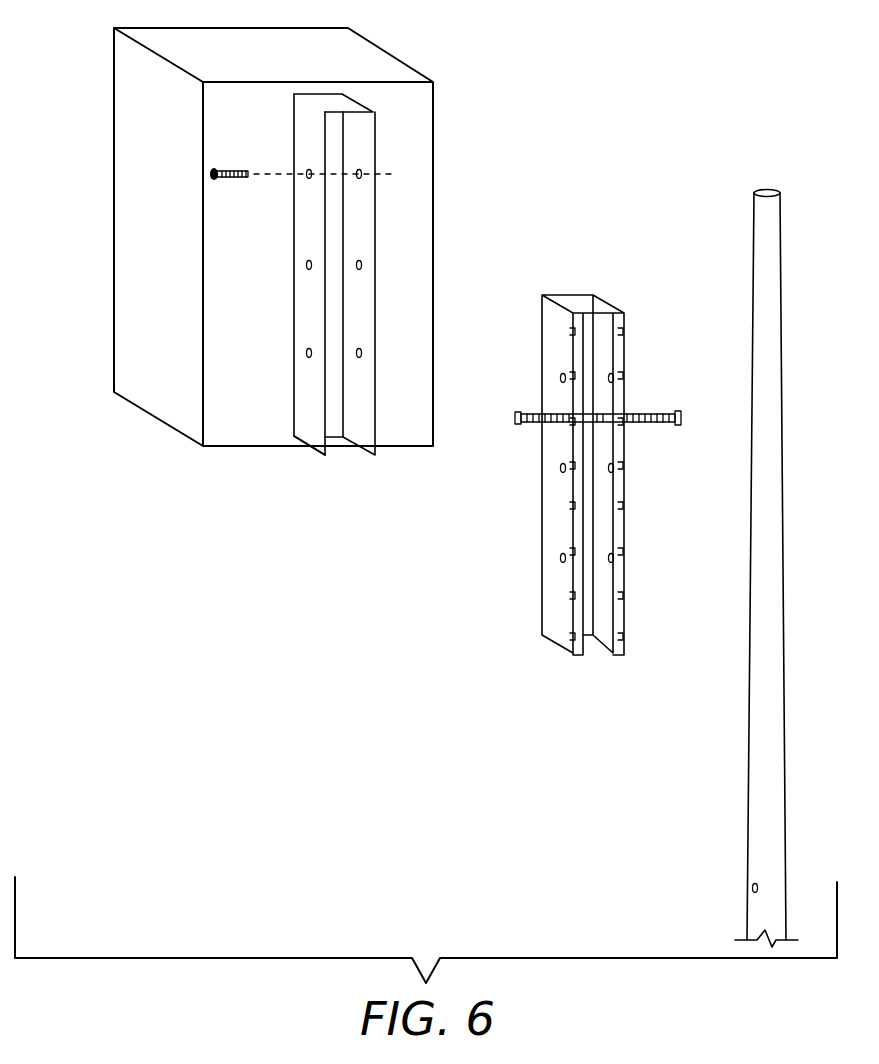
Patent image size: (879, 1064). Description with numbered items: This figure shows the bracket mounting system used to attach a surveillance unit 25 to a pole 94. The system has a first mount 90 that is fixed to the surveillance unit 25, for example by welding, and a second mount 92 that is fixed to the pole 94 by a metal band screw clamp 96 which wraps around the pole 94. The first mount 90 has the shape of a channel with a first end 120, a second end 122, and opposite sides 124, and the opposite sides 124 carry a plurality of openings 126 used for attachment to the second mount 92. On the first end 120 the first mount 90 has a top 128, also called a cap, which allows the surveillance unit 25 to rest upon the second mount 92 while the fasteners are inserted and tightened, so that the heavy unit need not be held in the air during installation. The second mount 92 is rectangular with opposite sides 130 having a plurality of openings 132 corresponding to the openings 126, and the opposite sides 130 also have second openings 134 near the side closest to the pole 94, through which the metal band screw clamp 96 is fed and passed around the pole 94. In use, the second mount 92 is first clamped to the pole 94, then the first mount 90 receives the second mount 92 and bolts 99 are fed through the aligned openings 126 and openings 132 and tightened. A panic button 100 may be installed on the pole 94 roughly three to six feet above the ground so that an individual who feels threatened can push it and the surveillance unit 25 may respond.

The surveillance unit 25 is at (420, 134).
The first mount 90 is at (257, 266).
The second mount 92 is at (576, 504).
The pole 94 is at (763, 238).
The metal band screw clamp 96 is at (640, 415).
The bolt 99 is at (240, 174).
The panic button 100 is at (752, 891).
The first end 120 is at (298, 128).
The second end 122 is at (305, 413).
The opposite sides 124 is at (300, 238).
The openings 126 is at (305, 265).
The top 128 is at (333, 105).
The opposite sides 130 is at (557, 520).
The openings 132 is at (560, 378).
The second openings 134 is at (570, 592).